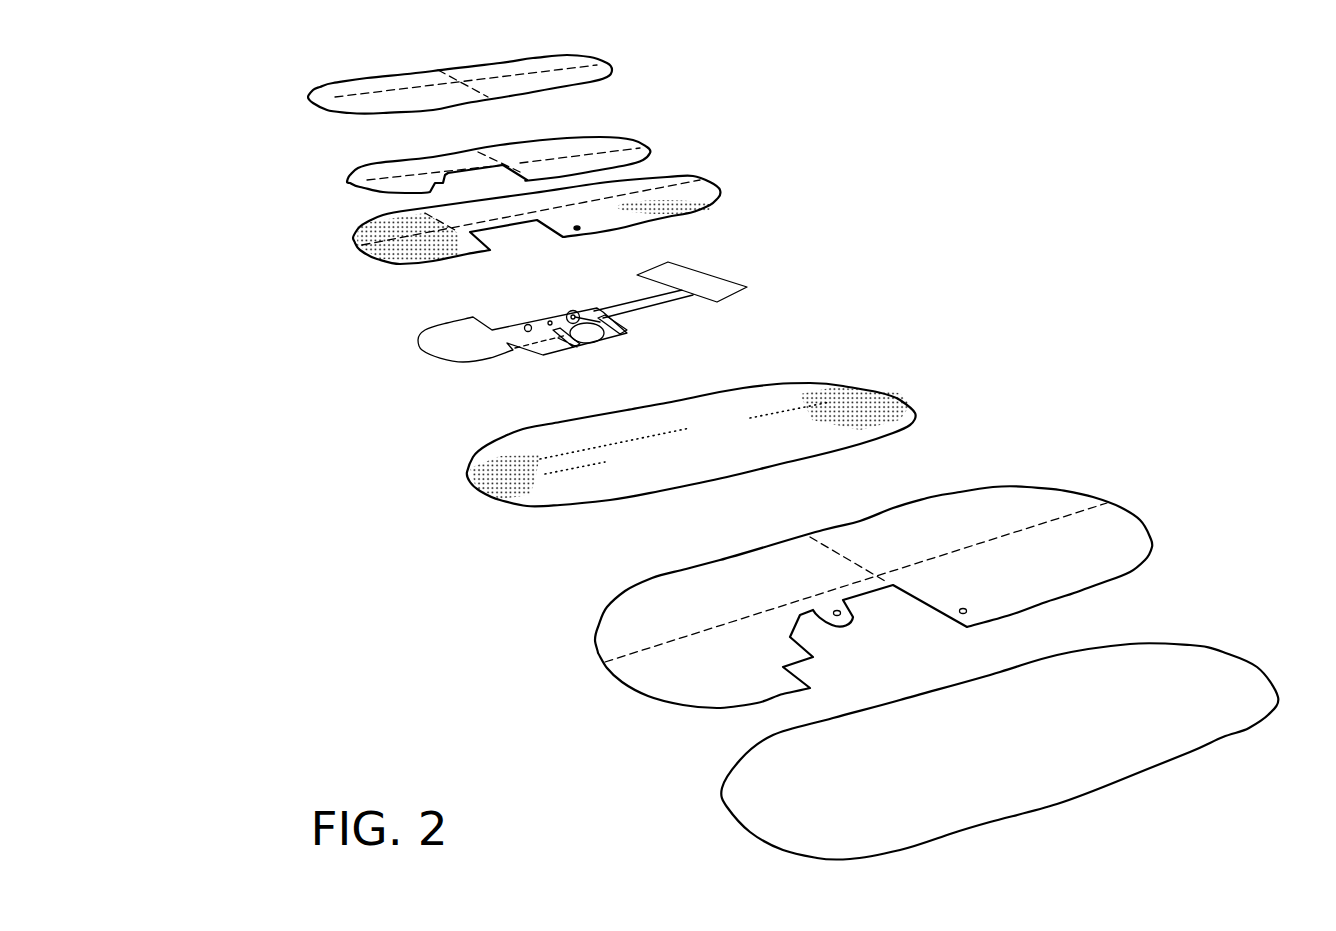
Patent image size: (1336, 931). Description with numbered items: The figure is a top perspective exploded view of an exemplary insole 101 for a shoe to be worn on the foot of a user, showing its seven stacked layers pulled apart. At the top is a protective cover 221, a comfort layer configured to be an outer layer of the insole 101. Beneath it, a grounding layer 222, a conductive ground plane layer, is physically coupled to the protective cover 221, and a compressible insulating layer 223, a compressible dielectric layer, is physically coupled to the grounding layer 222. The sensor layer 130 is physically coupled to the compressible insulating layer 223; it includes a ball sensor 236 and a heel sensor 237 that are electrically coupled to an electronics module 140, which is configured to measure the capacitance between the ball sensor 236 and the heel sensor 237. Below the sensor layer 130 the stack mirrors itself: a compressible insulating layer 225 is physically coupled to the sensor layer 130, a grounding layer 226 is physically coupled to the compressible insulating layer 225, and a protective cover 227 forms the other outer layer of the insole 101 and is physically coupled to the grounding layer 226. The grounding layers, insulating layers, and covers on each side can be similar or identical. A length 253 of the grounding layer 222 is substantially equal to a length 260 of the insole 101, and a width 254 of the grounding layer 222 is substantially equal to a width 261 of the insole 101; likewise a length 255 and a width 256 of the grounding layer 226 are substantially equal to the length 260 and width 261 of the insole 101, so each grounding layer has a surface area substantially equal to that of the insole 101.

The insole 101 is at (356, 792).
The sensor layer 130 is at (780, 250).
The electronics module 140 is at (590, 347).
The protective cover 221 is at (602, 66).
The grounding layer 222 is at (650, 148).
The compressible insulating layer 223 is at (708, 193).
The compressible insulating layer 225 is at (890, 402).
The grounding layer 226 is at (1120, 520).
The protective cover 227 is at (1233, 673).
The ball sensor 236 is at (430, 341).
The heel sensor 237 is at (740, 289).
The length of grounding layer 253 is at (374, 181).
The width of grounding layer 254 is at (489, 157).
The length of grounding layer 255 is at (642, 647).
The width of grounding layer 256 is at (850, 550).
The length of insole 260 is at (336, 97).
The width of insole 261 is at (441, 72).